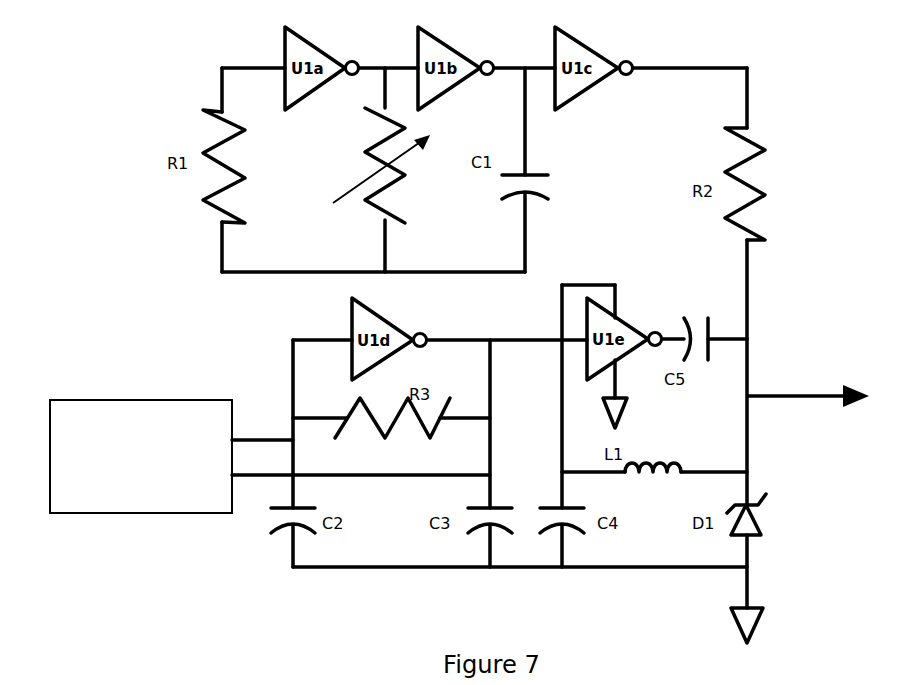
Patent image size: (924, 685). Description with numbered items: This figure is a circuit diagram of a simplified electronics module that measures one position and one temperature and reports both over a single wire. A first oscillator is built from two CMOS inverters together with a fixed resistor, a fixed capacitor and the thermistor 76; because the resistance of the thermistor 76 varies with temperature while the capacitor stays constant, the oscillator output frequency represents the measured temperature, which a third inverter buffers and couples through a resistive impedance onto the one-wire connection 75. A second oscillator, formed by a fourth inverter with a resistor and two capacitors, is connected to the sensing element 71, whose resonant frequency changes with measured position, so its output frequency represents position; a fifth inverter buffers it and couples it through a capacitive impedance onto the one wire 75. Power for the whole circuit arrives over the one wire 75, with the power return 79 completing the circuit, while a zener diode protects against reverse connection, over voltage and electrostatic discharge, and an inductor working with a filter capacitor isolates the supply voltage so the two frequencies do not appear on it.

The sensing element 71 is at (122, 388).
The one-wire connection 75 is at (805, 380).
The thermistor 76 is at (352, 156).
The power return 79 is at (770, 582).